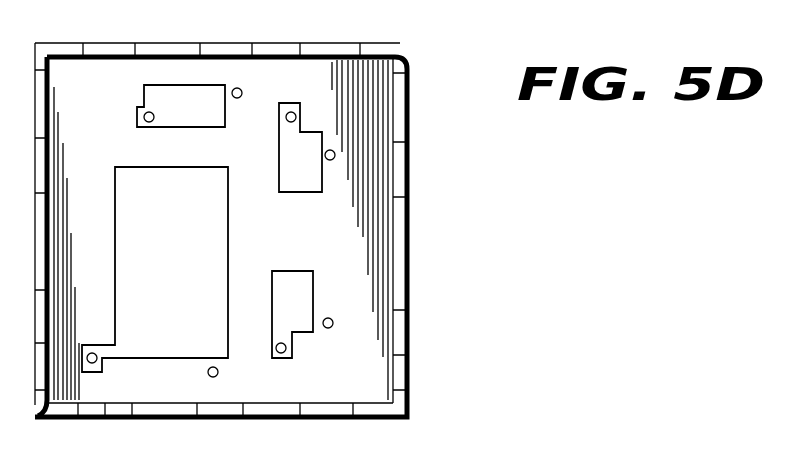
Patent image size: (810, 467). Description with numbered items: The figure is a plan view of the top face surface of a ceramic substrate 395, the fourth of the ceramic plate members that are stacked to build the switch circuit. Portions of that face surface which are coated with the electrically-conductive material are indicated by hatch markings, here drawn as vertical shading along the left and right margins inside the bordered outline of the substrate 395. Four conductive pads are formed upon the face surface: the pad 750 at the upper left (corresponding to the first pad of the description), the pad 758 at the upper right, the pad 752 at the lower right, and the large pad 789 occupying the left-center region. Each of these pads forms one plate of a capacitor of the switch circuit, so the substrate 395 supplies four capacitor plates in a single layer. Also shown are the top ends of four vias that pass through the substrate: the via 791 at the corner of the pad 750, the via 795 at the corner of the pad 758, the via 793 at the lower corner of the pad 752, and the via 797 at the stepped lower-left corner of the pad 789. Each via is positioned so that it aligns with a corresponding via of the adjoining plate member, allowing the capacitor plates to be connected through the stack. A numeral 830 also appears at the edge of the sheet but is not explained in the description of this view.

The ceramic substrate 395 is at (489, 42).
The component C1 750 is at (183, 98).
The via 791 is at (143, 113).
The pad 758 is at (310, 173).
The via 795 is at (292, 111).
The pad 752 is at (302, 303).
The via 793 is at (281, 354).
The pad 789 is at (155, 335).
The via 797 is at (91, 364).
The lead 830 is at (596, 460).